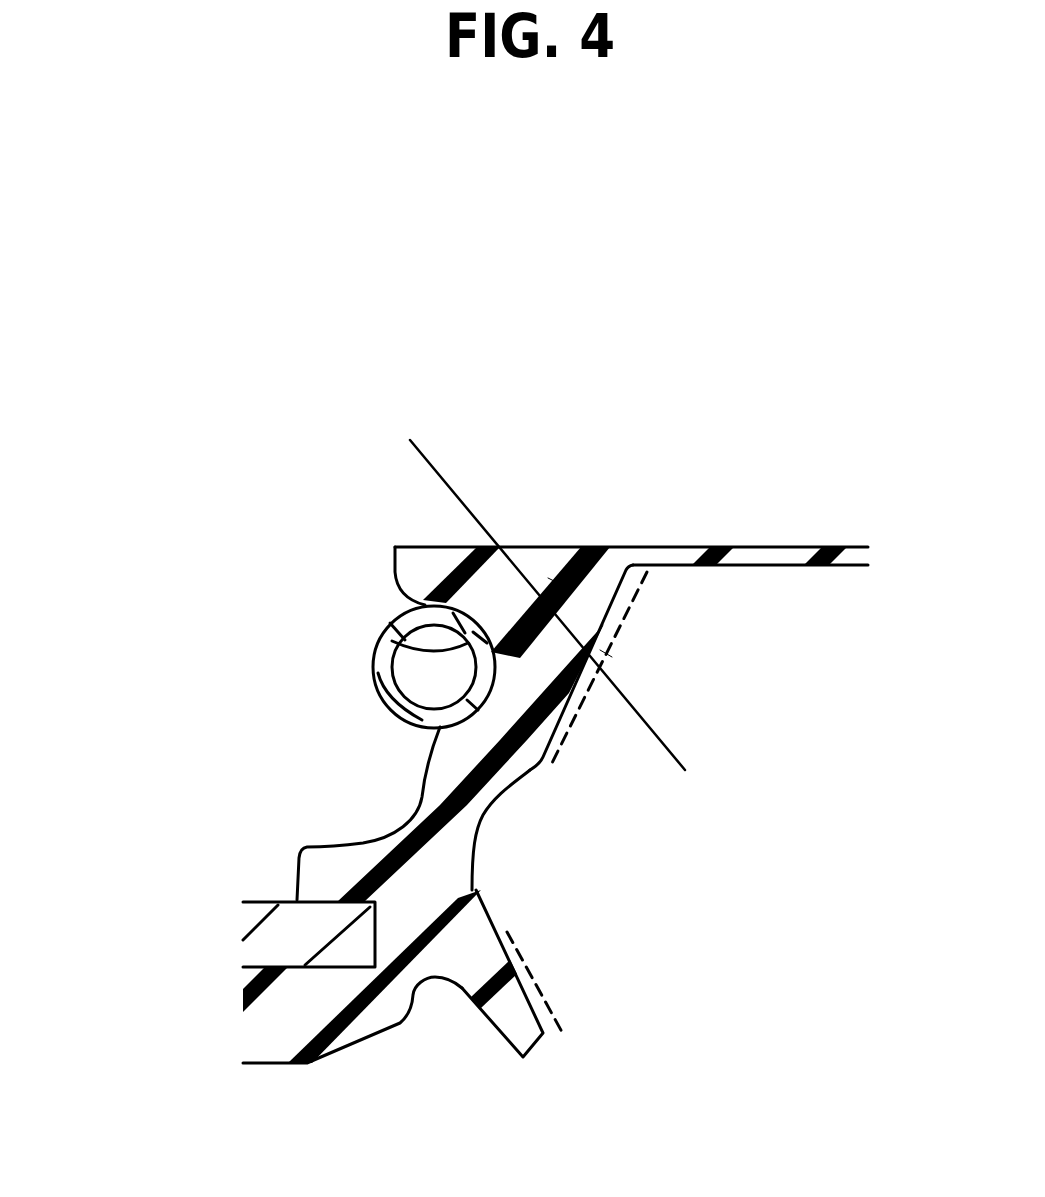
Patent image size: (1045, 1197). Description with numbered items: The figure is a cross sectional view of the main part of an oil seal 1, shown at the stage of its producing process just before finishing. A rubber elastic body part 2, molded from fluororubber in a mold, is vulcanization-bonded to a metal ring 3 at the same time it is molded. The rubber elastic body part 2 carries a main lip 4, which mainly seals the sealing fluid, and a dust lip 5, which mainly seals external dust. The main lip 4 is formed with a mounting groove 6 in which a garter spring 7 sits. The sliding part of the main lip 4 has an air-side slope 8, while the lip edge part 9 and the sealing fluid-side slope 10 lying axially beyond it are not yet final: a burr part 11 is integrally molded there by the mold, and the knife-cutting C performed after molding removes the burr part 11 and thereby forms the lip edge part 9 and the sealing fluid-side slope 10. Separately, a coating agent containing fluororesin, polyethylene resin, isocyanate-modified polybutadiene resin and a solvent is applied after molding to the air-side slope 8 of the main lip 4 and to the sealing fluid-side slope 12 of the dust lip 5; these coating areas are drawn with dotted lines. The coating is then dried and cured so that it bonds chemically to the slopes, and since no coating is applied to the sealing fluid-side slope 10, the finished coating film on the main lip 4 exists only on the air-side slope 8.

The oil seal 1 is at (323, 493).
The rubber elastic body part 2 is at (426, 797).
The metal ring 3 is at (268, 933).
The main lip 4 is at (540, 647).
The dust lip 5 is at (523, 1033).
The mounting groove 6 is at (383, 632).
The garter spring 7 is at (383, 663).
The air-side slope 8 is at (563, 710).
The lip edge part 9 is at (607, 653).
The sealing fluid-side slope 10 is at (550, 577).
The burr part 11 is at (755, 560).
The sealing fluid-side slope 12 is at (530, 993).
The knife-cutting C is at (549, 607).